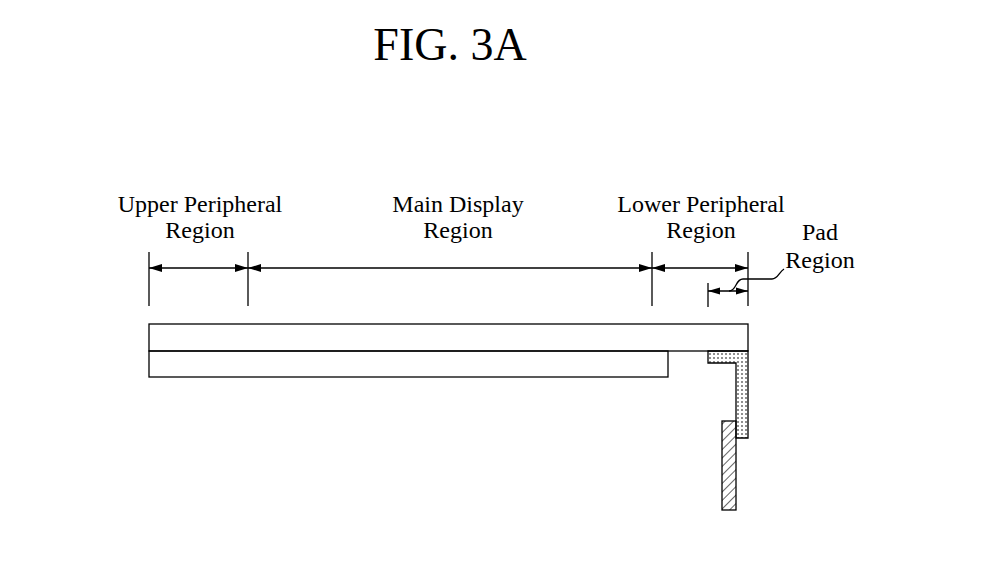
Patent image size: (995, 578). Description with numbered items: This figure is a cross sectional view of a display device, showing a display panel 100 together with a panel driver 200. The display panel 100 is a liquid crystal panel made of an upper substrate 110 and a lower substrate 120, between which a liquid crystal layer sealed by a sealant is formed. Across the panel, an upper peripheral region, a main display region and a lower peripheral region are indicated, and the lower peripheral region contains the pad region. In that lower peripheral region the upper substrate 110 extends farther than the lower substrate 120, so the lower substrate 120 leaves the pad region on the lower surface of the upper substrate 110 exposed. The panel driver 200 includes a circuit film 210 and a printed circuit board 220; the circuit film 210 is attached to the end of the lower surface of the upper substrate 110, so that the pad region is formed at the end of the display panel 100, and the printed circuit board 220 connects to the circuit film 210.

The display panel 100 is at (386, 352).
The upper substrate 110 is at (149, 338).
The lower substrate 120 is at (149, 367).
The panel driver 200 is at (794, 430).
The circuit film 210 is at (748, 393).
The printed circuit board 220 is at (772, 465).